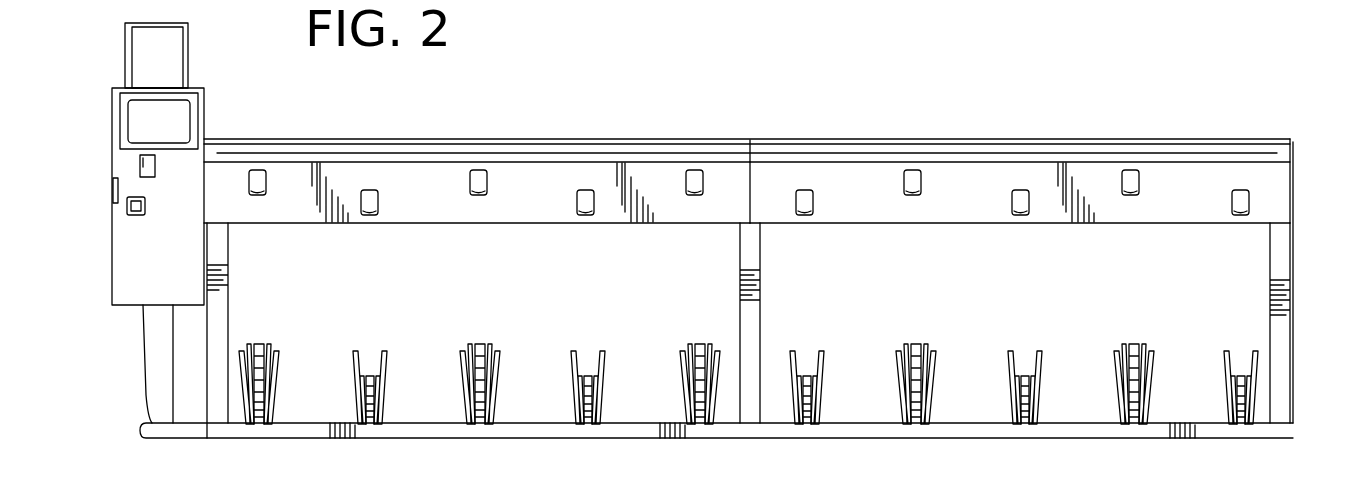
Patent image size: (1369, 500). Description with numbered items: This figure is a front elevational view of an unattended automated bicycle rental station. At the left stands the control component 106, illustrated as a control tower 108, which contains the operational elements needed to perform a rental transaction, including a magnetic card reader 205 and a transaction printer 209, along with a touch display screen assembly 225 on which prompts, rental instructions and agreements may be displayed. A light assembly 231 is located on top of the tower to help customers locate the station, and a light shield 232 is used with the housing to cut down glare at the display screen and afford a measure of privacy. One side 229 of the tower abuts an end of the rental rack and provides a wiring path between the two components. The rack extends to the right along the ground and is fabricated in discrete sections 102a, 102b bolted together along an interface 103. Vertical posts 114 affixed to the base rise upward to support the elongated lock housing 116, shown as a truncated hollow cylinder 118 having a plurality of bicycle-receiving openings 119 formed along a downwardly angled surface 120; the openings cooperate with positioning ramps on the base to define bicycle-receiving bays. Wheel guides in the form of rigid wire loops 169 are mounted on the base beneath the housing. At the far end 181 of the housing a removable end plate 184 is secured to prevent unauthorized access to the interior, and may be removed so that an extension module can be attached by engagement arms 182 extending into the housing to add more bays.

The rental rack section 102a is at (540, 140).
The rental rack section 102b is at (849, 156).
The interface 103 is at (750, 140).
The control component 106 is at (118, 74).
The control tower 108 is at (112, 160).
The vertical post 114 is at (740, 288).
The lock housing 116 is at (1146, 139).
The truncated hollow cylinder 118 is at (1232, 157).
The bicycle-receiving openings 119 is at (912, 197).
The downwardly angled surface 120 is at (1275, 188).
The wire loops 169 is at (797, 386).
The far end 181 is at (1292, 156).
The engagement arms 182 is at (1345, 12).
The removable end plate 184 is at (1291, 222).
The magnetic card reader 205 is at (145, 177).
The transaction printer 209 is at (129, 216).
The touch display screen assembly 225 is at (170, 117).
The side of the control tower 229 is at (206, 133).
The light assembly 231 is at (167, 33).
The light shield 232 is at (205, 123).